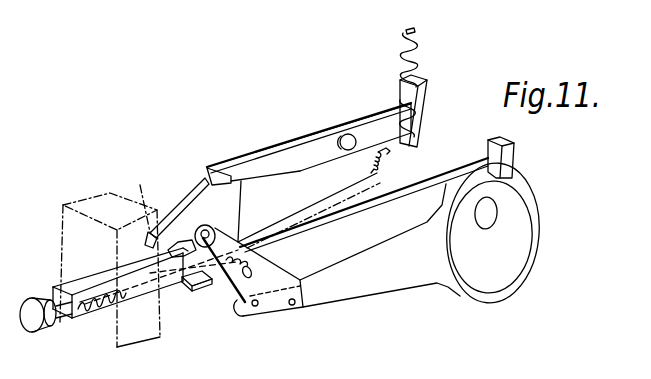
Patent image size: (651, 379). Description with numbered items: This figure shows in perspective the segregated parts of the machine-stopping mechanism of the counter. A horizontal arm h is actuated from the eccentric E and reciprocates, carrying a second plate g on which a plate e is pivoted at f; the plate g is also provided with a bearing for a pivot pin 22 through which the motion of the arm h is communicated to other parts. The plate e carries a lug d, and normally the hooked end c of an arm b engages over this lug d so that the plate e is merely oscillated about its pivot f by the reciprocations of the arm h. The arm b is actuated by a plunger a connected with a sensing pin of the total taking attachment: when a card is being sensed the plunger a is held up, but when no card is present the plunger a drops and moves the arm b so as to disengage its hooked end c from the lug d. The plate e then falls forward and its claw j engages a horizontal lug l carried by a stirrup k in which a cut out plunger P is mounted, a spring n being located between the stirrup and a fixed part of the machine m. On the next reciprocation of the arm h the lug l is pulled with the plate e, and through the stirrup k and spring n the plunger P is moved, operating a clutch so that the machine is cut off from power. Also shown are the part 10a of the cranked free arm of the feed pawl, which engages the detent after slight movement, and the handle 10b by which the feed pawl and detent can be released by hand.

The plunger a is at (400, 78).
The arm b is at (287, 140).
The hooked end c is at (225, 173).
The lug d is at (246, 182).
The plate e is at (197, 197).
The pivot f is at (240, 240).
The second plate g is at (272, 270).
The horizontal arm h is at (360, 250).
The claw j is at (140, 200).
The stirrup k is at (100, 313).
The horizontal lug l is at (178, 270).
The fixed part of the machine m is at (143, 330).
The spring n is at (72, 327).
The cut out plunger P is at (33, 298).
The eccentric E is at (527, 233).
The pivot pin 22 is at (243, 278).
The part of feed pawl 10a is at (85, 378).
The handle 10b is at (248, 374).